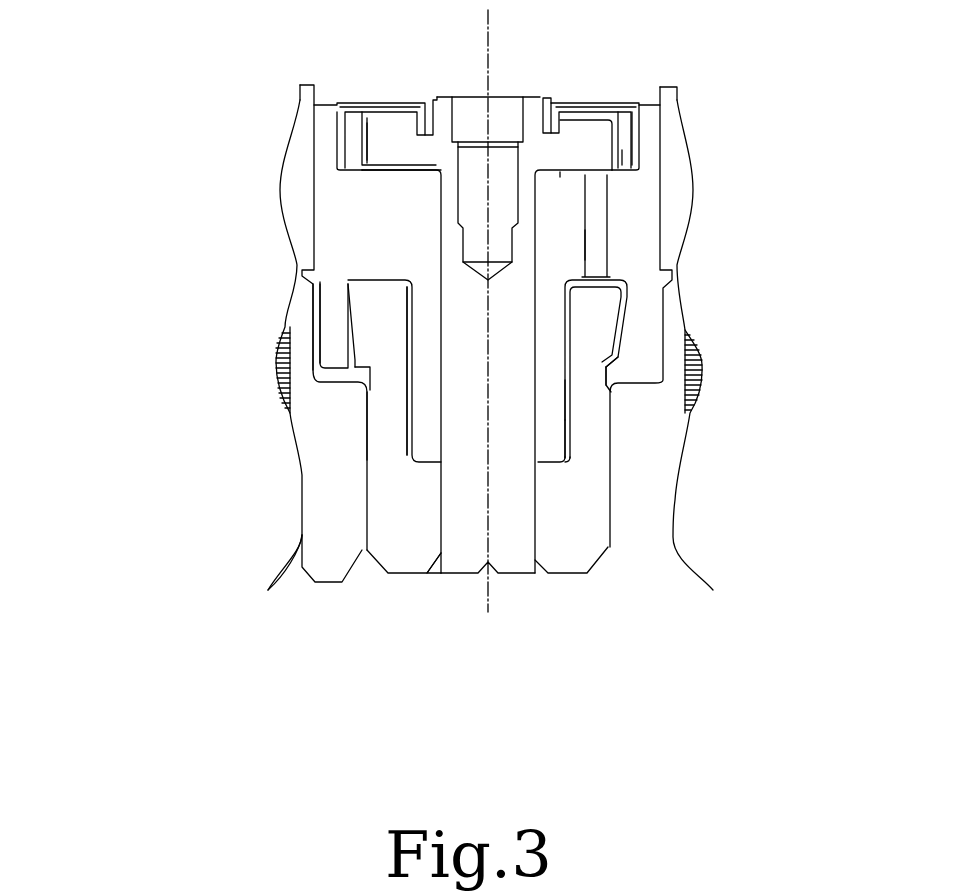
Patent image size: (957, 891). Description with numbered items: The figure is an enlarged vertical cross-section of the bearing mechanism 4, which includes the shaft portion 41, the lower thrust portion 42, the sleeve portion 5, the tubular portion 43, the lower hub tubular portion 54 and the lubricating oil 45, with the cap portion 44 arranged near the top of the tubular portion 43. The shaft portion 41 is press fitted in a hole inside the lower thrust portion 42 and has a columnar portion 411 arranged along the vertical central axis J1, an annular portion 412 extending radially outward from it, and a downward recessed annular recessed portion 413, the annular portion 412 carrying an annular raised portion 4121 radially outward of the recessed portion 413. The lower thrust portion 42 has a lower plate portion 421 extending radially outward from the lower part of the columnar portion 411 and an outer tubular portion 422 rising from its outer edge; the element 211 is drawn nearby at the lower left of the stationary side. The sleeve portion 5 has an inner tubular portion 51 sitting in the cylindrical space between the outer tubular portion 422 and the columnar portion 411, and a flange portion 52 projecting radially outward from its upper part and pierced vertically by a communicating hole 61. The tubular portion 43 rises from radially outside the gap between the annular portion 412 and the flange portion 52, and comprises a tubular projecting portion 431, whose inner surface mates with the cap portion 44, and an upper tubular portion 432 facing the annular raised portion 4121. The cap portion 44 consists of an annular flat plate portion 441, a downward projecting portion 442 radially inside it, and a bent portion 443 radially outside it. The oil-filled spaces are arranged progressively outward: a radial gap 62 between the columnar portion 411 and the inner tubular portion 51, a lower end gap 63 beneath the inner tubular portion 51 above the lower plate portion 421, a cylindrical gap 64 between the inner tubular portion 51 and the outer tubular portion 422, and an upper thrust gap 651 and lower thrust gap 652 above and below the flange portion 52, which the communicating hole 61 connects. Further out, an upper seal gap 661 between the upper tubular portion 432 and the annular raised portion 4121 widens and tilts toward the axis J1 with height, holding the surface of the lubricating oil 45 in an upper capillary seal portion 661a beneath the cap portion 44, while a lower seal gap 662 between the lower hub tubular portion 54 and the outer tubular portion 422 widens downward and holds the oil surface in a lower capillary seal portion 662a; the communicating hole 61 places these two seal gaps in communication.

The bearing mechanism 4 is at (121, 62).
The shaft portion 41 is at (530, 626).
The columnar portion 411 is at (512, 517).
The annular portion 412 is at (423, 153).
The annular raised portion 4121 is at (388, 145).
The recessed portion 413 is at (428, 98).
The lower thrust portion 42 is at (385, 620).
The lower plate portion 421 is at (407, 530).
The outer tubular portion 422 is at (387, 432).
The tubular portion 43 is at (159, 128).
The tubular projecting portion 431 is at (323, 132).
The upper tubular portion 432 is at (335, 160).
The cap portion 44 is at (634, 13).
The flat plate portion 441 is at (595, 107).
The projecting portion 442 is at (553, 101).
The bent portion 443 is at (633, 110).
The lubricating oil 45 is at (598, 250).
The sleeve portion 5 is at (150, 201).
The inner tubular portion 51 is at (423, 373).
The flange portion 52 is at (370, 213).
The lower hub tubular portion 54 is at (332, 337).
The communicating hole 61 is at (597, 233).
The radial gap 62 is at (537, 423).
The lower end gap 63 is at (566, 462).
The cylindrical gap 64 is at (570, 393).
The upper thrust gap 651 is at (560, 173).
The lower thrust gap 652 is at (623, 303).
The upper seal gap 661 is at (616, 142).
The upper capillary seal portion 661a is at (622, 157).
The lower seal gap 662 is at (626, 322).
The lower capillary seal portion 662a is at (636, 342).
The circuit board 211 is at (335, 548).
The central axis J1 is at (489, 67).